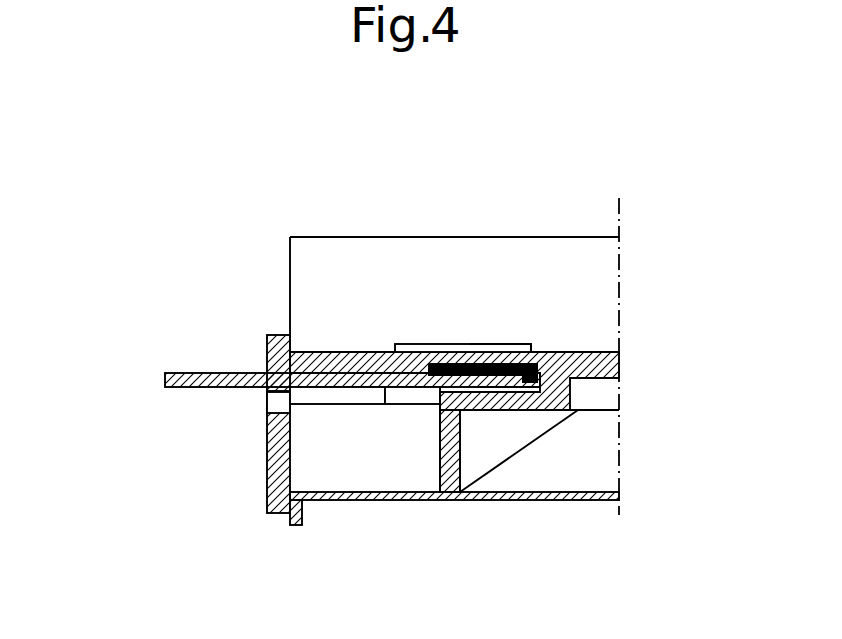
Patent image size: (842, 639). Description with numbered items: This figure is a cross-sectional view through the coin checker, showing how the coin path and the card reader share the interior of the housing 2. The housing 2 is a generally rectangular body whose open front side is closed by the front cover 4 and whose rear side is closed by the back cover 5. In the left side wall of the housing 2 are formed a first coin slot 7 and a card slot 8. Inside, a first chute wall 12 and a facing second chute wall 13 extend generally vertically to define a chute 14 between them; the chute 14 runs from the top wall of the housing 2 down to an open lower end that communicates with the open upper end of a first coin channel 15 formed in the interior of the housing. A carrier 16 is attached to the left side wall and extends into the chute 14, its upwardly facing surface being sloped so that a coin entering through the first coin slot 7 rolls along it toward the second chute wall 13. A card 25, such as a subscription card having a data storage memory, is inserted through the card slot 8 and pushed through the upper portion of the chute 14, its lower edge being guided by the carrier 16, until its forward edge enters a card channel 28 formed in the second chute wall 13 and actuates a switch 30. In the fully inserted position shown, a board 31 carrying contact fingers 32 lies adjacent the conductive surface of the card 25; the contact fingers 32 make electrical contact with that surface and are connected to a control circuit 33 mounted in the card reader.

The housing 2 is at (270, 458).
The front cover 4 is at (552, 500).
The back cover 5 is at (320, 237).
The first coin slot 7 is at (267, 412).
The card slot 8 is at (267, 375).
The first chute wall 12 is at (308, 512).
The second chute wall 13 is at (440, 462).
The chute 14 is at (347, 442).
The first coin channel 15 is at (421, 398).
The carrier 16 is at (267, 391).
The card 25 is at (213, 373).
The card channel 28 is at (507, 387).
The switch 30 is at (545, 385).
The board 31 is at (452, 360).
The contact fingers 32 is at (510, 344).
The control circuit 33 is at (495, 345).